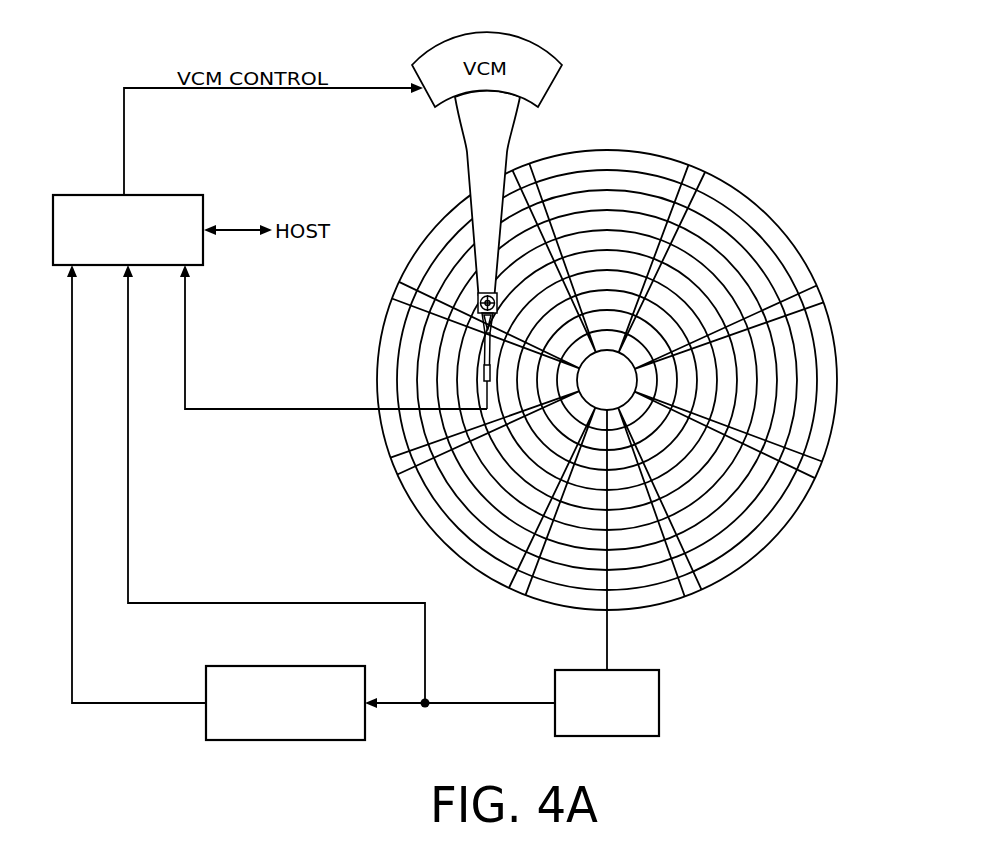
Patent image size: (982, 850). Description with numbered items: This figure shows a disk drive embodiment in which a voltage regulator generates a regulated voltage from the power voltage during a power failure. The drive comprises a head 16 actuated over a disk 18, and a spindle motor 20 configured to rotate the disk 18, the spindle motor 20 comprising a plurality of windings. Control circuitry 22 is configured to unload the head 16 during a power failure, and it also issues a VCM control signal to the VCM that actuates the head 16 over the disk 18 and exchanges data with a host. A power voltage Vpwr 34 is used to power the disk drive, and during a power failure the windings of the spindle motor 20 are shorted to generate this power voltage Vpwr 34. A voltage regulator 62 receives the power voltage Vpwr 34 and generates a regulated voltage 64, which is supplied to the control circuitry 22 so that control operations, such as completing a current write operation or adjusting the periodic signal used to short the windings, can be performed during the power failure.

The head 16 is at (469, 366).
The disk 18 is at (770, 196).
The spindle motor 20 is at (659, 703).
The control circuitry 22 is at (169, 195).
The power voltage Vpwr 34 is at (485, 704).
The voltage regulator 62 is at (284, 666).
The regulated voltage 64 is at (119, 703).